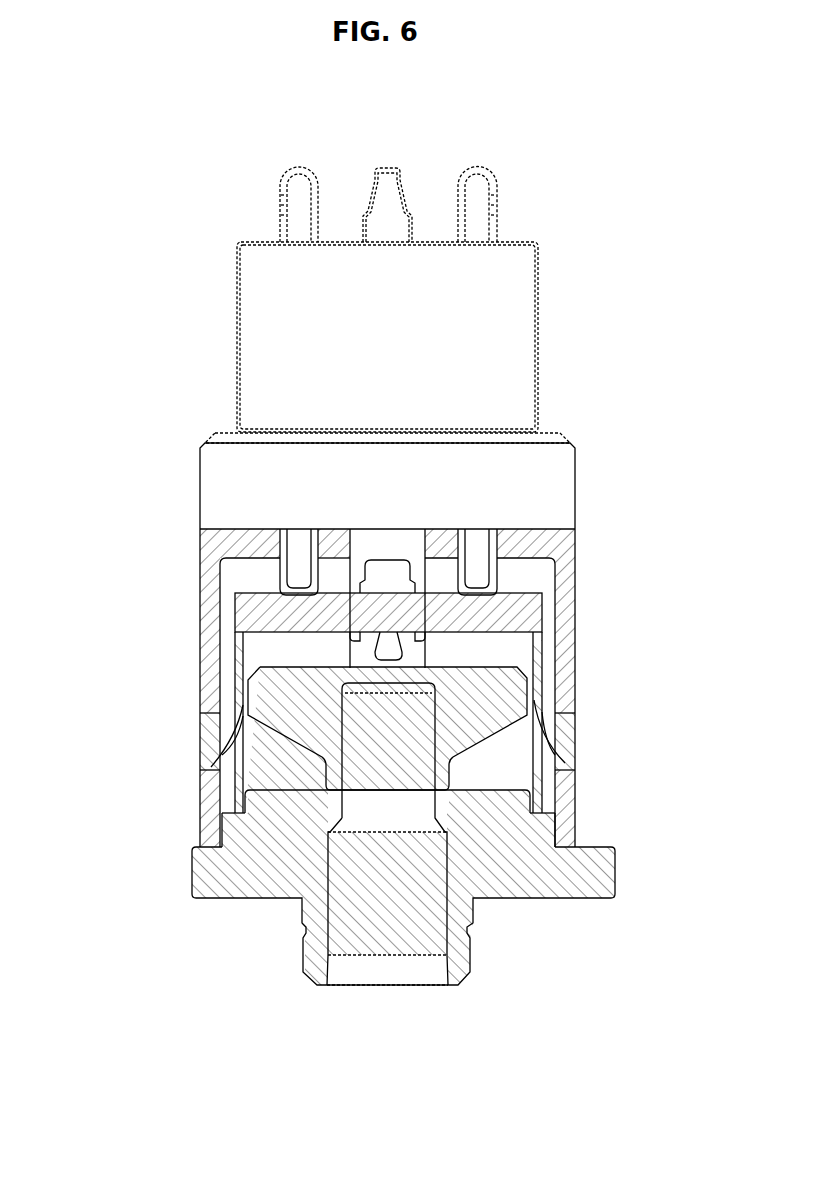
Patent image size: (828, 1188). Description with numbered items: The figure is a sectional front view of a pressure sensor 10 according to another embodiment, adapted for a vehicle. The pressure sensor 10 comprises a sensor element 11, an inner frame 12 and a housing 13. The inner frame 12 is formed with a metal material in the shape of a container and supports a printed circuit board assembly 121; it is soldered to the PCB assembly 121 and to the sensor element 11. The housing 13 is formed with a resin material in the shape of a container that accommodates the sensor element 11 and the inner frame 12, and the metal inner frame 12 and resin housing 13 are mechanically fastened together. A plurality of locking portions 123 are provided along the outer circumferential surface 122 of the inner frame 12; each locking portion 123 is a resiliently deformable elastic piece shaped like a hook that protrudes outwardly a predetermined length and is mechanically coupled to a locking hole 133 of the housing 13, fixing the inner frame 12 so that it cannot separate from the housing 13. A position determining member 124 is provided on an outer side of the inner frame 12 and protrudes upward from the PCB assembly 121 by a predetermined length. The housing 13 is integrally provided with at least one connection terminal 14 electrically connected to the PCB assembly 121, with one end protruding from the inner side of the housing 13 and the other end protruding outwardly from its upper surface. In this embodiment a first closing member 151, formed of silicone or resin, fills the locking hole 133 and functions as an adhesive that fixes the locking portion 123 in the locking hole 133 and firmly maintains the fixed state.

The pressure sensor 10 is at (402, 120).
The sensor element 11 is at (602, 877).
The inner frame 12 is at (118, 580).
The printed circuit board assembly 121 is at (242, 615).
The outer circumferential surface 122 is at (242, 690).
The locking portion 123 is at (210, 757).
The position determining member 124 is at (360, 657).
The housing 13 is at (563, 492).
The connection terminal 14 is at (495, 575).
The locking hole 133 is at (201, 767).
The first closing member 151 is at (565, 732).